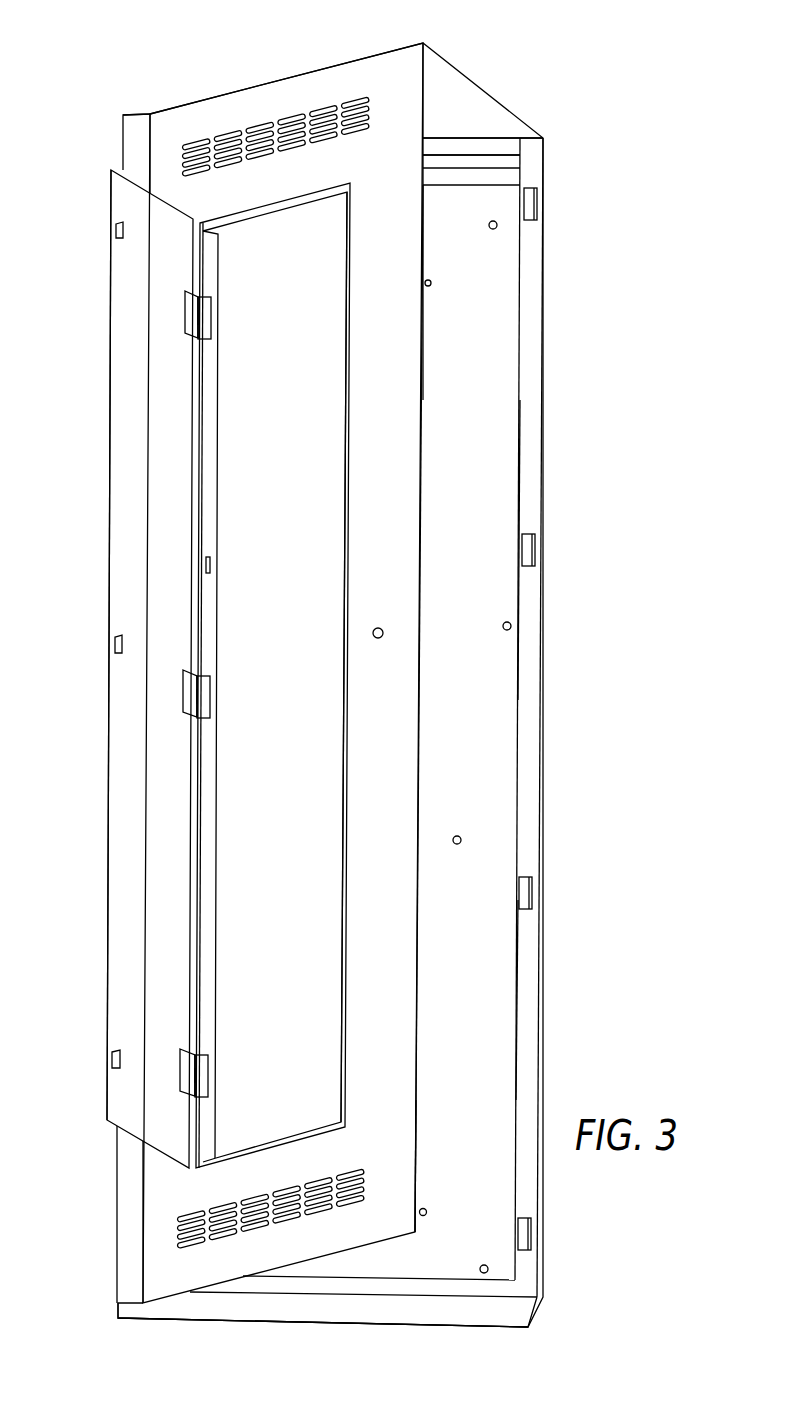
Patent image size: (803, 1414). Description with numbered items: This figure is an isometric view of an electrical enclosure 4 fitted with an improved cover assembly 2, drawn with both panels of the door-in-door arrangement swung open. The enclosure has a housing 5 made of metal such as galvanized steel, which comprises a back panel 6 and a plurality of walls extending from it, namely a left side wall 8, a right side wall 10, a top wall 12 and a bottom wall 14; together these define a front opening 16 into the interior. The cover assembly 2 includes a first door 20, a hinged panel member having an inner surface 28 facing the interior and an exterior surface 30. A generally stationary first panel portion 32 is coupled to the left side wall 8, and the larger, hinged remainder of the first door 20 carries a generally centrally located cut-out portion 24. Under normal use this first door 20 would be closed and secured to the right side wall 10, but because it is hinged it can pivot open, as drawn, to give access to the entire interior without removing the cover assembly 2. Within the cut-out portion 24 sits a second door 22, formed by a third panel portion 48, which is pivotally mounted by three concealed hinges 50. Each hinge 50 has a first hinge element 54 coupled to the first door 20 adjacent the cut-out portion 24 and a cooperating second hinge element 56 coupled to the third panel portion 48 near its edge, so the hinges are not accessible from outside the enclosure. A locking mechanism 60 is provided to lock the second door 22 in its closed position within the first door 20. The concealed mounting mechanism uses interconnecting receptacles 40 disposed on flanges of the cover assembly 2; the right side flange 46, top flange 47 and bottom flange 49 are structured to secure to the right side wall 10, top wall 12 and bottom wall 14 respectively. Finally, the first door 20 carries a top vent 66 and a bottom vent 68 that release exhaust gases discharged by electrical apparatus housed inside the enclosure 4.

The cover assembly 2 is at (147, 66).
The electrical enclosure 4 is at (610, 1299).
The housing 5 is at (506, 136).
The back panel 6 is at (476, 311).
The left side wall 8 is at (118, 1183).
The right side wall 10 is at (545, 670).
The top wall 12 is at (474, 137).
The bottom wall 14 is at (528, 1308).
The front opening 16 is at (502, 997).
The first door 20 is at (372, 68).
The second door 22 is at (122, 750).
The cut-out portion 24 is at (328, 527).
The inner surface 28 is at (426, 368).
The exterior surface 30 is at (412, 1065).
The first panel portion 32 is at (135, 140).
The interconnecting receptacle 40 is at (537, 205).
The right side flange 46 is at (532, 610).
The top flange 47 is at (440, 135).
The third panel portion 48 is at (123, 377).
The bottom flange 49 is at (397, 1285).
The concealed hinge 50 is at (226, 300).
The first hinge element 54 is at (212, 325).
The second hinge element 56 is at (186, 312).
The locking mechanism 60 is at (382, 638).
The top vent 66 is at (228, 171).
The bottom vent 68 is at (282, 1202).